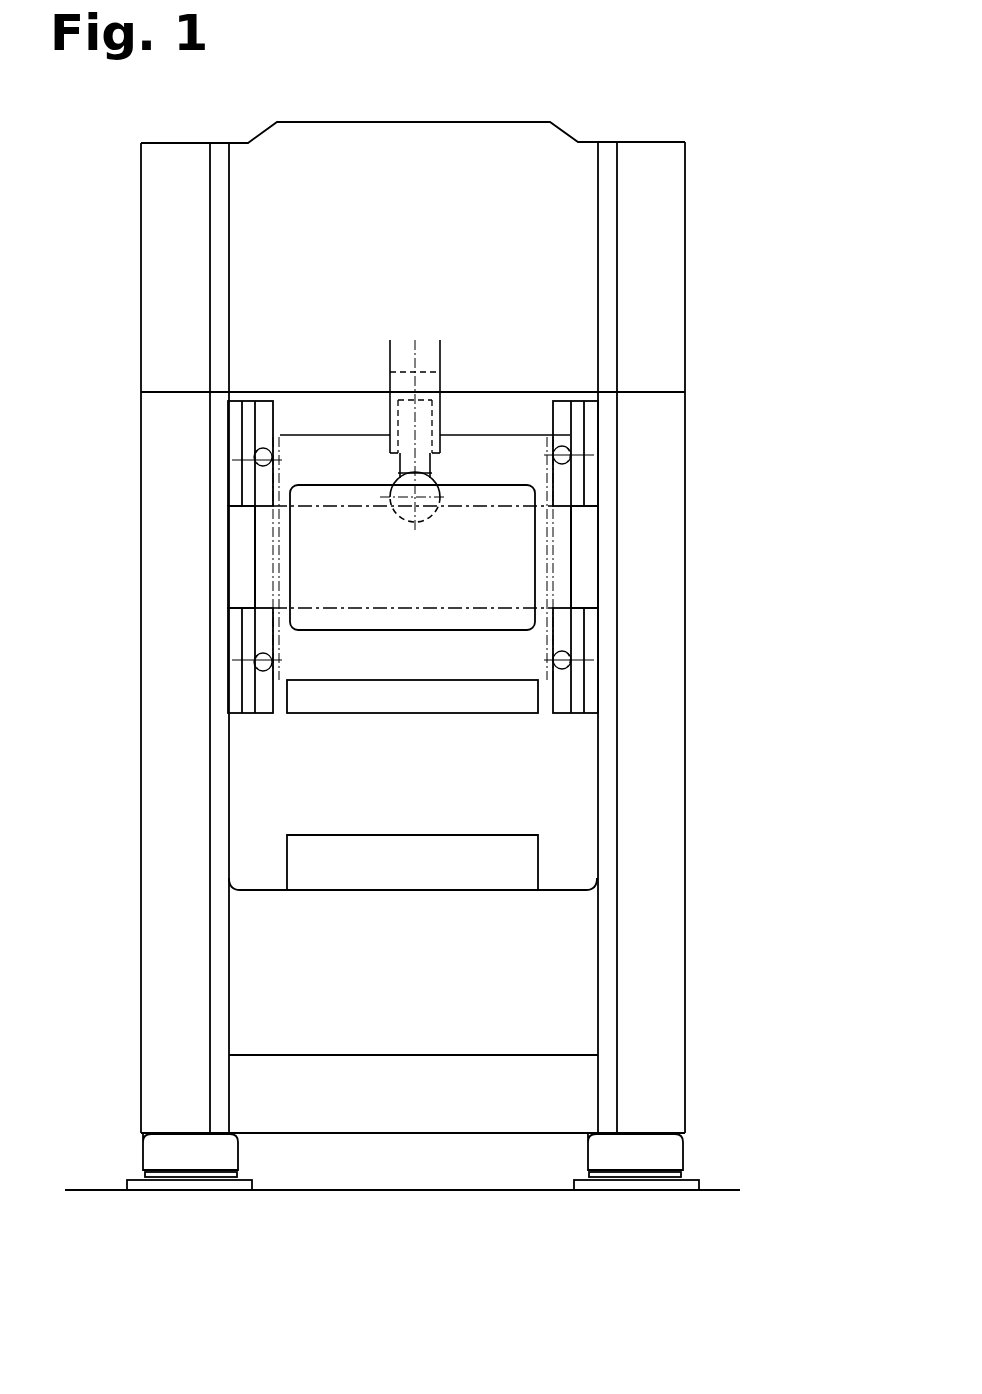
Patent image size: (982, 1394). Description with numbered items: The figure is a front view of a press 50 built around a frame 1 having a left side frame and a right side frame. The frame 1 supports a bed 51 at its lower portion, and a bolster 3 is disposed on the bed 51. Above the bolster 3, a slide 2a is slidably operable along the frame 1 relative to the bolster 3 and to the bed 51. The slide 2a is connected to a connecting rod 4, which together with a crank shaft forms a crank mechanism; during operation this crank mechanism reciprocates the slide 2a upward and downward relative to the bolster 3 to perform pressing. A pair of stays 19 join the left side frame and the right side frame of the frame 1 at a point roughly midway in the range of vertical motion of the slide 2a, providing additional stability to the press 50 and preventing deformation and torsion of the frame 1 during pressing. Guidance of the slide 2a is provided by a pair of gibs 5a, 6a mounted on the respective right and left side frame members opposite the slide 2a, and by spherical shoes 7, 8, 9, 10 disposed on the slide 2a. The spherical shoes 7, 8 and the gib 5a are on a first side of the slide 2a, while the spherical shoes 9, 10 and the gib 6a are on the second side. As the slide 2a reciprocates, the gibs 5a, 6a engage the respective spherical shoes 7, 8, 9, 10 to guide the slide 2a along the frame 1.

The frame 1 is at (648, 467).
The slide 2a is at (525, 703).
The bolster 3 is at (503, 866).
The connecting rod 4 is at (420, 383).
The gib 5a is at (563, 419).
The gib 6a is at (262, 417).
The spherical shoe 7 is at (572, 443).
The spherical shoe 8 is at (568, 645).
The spherical shoe 9 is at (254, 448).
The spherical shoe 10 is at (257, 640).
The stay 19 is at (583, 571).
The press 50 is at (140, 143).
The bed 51 is at (273, 970).